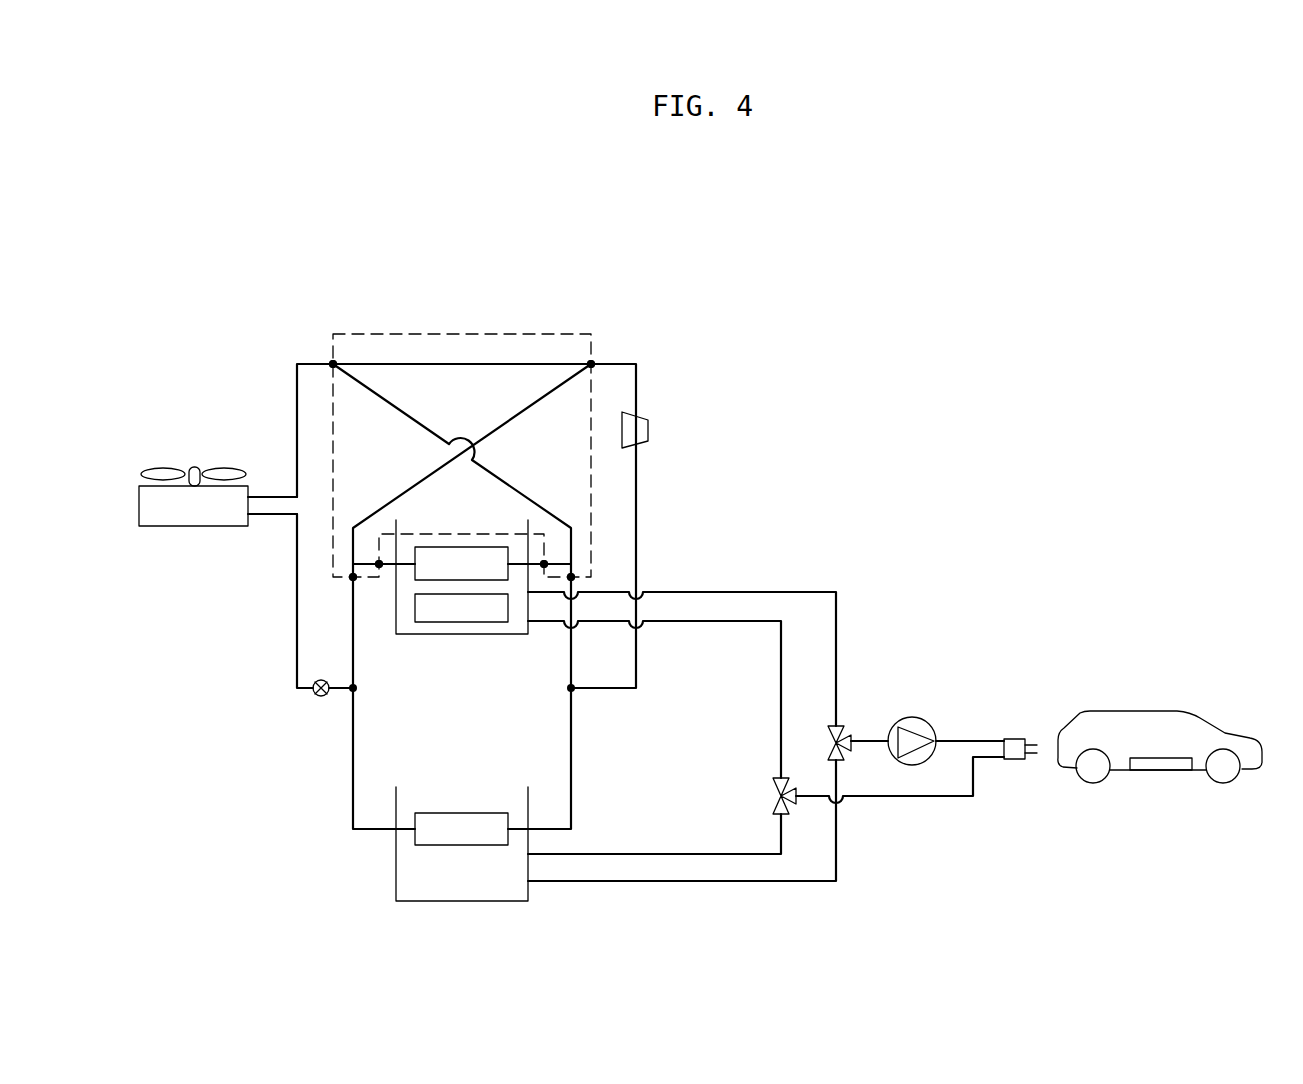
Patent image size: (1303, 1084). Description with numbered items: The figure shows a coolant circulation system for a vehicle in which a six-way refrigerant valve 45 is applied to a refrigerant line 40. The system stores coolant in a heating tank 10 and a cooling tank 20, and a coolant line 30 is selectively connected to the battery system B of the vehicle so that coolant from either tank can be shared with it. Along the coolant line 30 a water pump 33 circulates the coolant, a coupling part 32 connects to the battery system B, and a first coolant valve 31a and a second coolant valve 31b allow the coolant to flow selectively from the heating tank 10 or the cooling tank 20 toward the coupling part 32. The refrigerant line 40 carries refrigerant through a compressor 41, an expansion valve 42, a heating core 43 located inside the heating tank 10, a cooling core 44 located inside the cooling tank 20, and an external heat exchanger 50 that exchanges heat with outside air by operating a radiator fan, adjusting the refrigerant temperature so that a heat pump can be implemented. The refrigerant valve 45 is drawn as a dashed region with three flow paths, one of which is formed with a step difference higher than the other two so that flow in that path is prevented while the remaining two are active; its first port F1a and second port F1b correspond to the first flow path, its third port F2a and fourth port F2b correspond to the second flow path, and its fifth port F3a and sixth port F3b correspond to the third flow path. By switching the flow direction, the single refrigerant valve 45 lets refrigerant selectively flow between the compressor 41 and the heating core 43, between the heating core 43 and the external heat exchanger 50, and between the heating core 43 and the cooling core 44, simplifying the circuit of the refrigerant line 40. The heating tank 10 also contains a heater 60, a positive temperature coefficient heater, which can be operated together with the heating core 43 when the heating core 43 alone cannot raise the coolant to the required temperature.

The heating tank 10 is at (431, 634).
The cooling tank 20 is at (396, 875).
The coolant line 30 is at (836, 640).
The first coolant valve 31a is at (838, 730).
The second coolant valve 31b is at (773, 800).
The coupling part 32 is at (1012, 760).
The water pump 33 is at (918, 718).
The refrigerant line 40 is at (463, 364).
The compressor 41 is at (648, 422).
The expansion valve 42 is at (321, 697).
The heating core 43 is at (456, 547).
The cooling core 44 is at (477, 813).
The refrigerant valve 45 is at (389, 331).
The external heat exchanger 50 is at (171, 520).
The heater 60 is at (490, 622).
The battery system B is at (1160, 770).
The first port F1a is at (591, 364).
The second port F1b is at (379, 564).
The third port F2a is at (333, 364).
The fourth port F2b is at (544, 564).
The fifth port F3a is at (353, 577).
The sixth port F3b is at (571, 577).